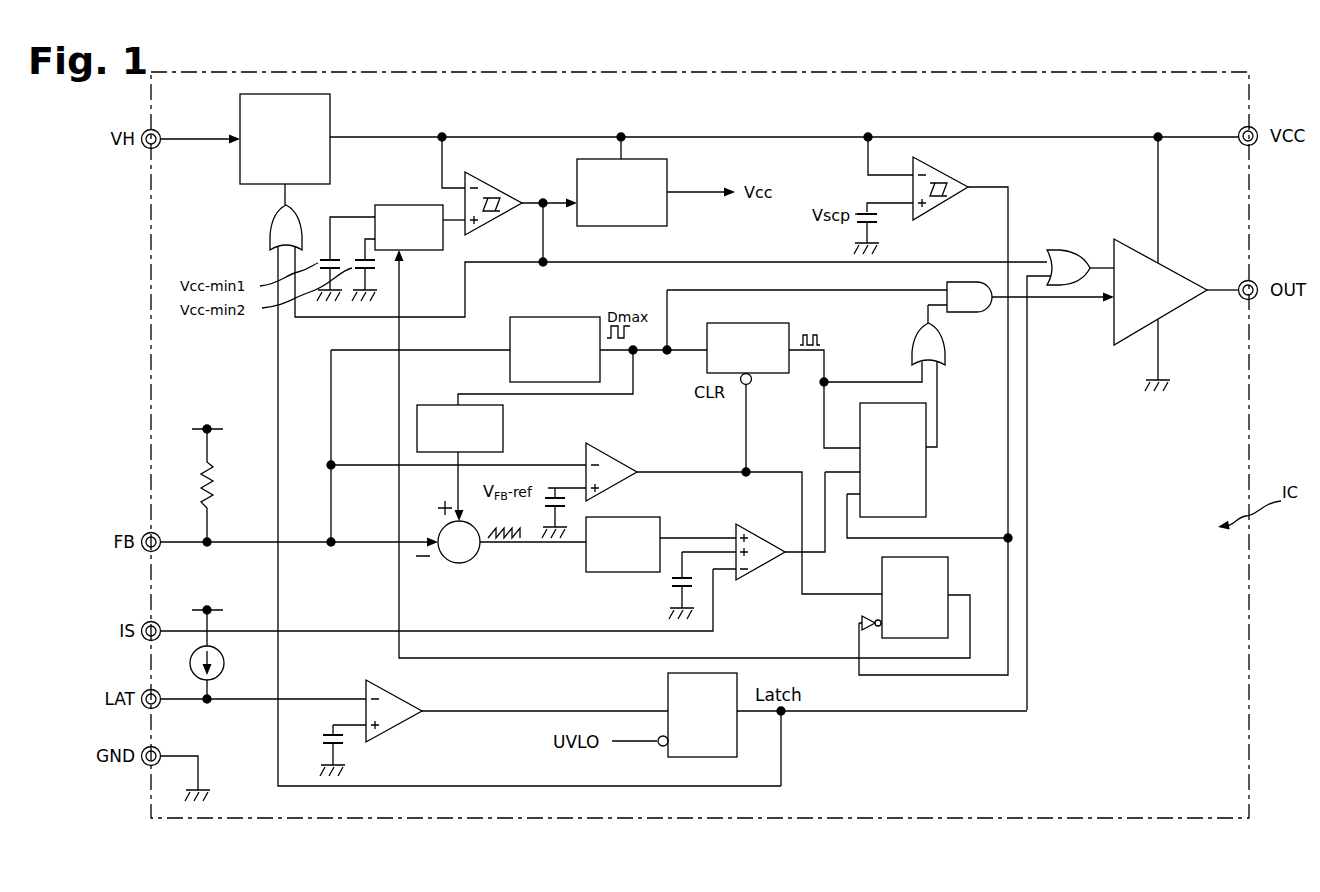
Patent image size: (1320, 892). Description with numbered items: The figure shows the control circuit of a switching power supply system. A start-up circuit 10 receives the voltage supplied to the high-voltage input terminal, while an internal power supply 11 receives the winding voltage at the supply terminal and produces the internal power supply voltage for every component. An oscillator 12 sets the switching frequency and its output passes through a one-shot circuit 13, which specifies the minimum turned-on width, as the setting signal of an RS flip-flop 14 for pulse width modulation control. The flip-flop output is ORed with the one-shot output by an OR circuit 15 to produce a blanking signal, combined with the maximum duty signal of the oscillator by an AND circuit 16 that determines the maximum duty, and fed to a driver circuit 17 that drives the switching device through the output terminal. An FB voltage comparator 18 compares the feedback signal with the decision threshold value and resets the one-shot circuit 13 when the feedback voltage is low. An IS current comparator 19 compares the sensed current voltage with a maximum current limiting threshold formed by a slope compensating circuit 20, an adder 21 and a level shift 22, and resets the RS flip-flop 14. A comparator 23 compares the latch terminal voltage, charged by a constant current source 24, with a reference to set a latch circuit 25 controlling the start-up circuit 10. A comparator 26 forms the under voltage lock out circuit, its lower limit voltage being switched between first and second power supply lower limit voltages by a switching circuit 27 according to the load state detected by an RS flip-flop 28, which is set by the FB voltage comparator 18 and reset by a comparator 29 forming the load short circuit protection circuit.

The start-up circuit 10 is at (240, 152).
The internal power supply 11 is at (667, 172).
The oscillator 12 is at (553, 317).
The one-shot circuit 13 is at (750, 323).
The RS flip-flop 14 is at (926, 480).
The OR circuit 15 is at (912, 345).
The AND circuit 16 is at (968, 312).
The driver circuit 17 is at (1114, 240).
The FB voltage comparator 18 is at (604, 446).
The IS current comparator 19 is at (752, 574).
The slope compensating circuit 20 is at (440, 405).
The adder 21 is at (462, 563).
The level shift 22 is at (605, 572).
The comparator 23 is at (390, 727).
The constant current source 24 is at (224, 661).
The latch circuit 25 is at (668, 693).
The comparator 26 is at (494, 178).
The switching circuit 27 is at (403, 205).
The RS flip-flop 28 is at (948, 580).
The comparator 29 is at (940, 205).